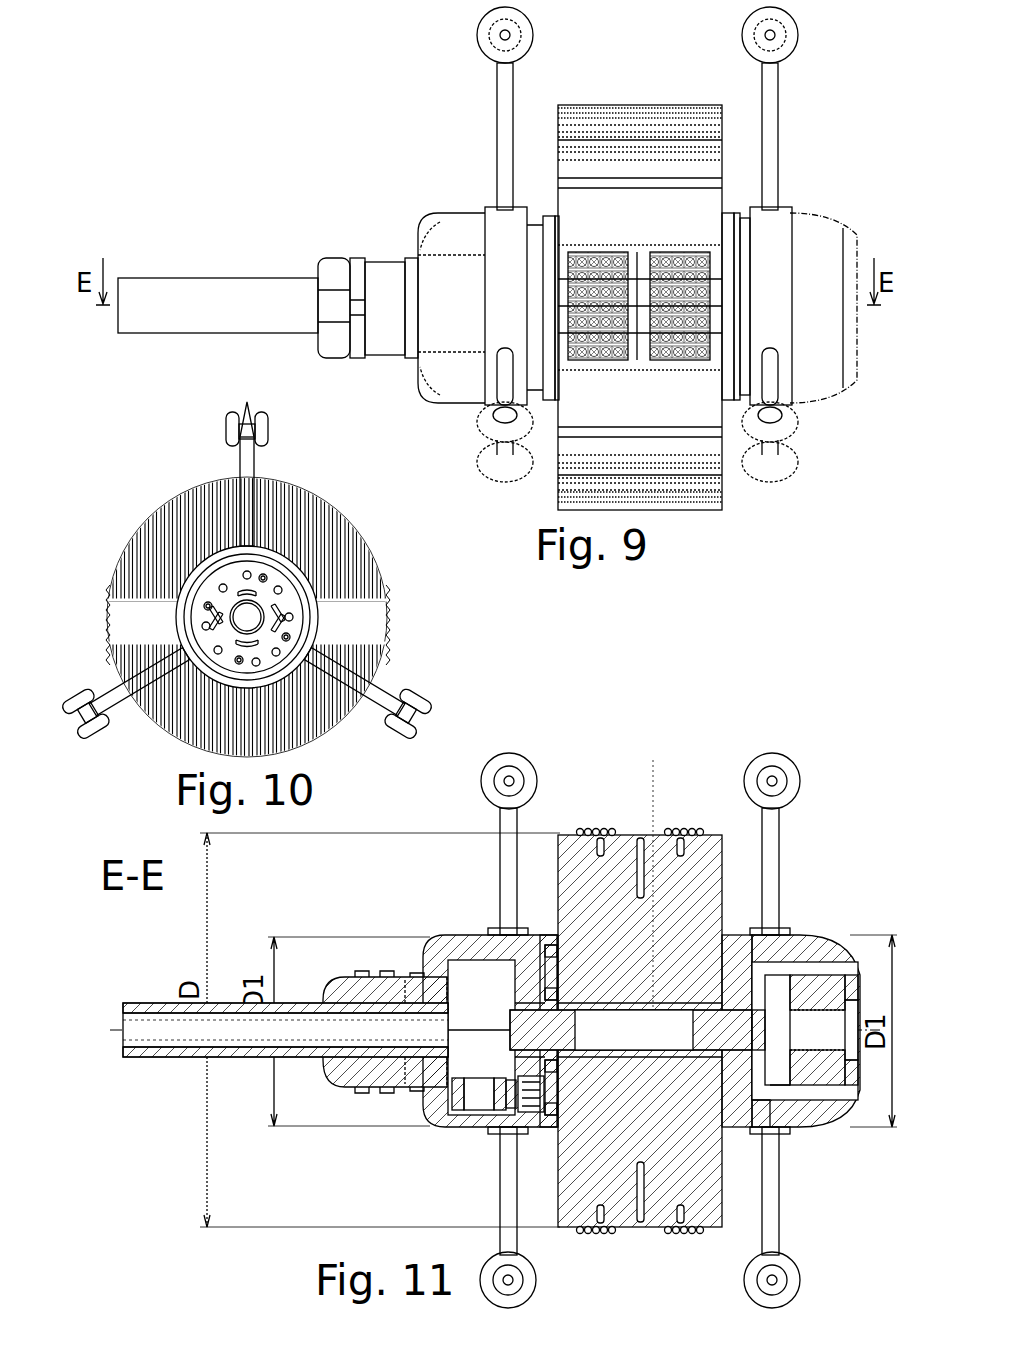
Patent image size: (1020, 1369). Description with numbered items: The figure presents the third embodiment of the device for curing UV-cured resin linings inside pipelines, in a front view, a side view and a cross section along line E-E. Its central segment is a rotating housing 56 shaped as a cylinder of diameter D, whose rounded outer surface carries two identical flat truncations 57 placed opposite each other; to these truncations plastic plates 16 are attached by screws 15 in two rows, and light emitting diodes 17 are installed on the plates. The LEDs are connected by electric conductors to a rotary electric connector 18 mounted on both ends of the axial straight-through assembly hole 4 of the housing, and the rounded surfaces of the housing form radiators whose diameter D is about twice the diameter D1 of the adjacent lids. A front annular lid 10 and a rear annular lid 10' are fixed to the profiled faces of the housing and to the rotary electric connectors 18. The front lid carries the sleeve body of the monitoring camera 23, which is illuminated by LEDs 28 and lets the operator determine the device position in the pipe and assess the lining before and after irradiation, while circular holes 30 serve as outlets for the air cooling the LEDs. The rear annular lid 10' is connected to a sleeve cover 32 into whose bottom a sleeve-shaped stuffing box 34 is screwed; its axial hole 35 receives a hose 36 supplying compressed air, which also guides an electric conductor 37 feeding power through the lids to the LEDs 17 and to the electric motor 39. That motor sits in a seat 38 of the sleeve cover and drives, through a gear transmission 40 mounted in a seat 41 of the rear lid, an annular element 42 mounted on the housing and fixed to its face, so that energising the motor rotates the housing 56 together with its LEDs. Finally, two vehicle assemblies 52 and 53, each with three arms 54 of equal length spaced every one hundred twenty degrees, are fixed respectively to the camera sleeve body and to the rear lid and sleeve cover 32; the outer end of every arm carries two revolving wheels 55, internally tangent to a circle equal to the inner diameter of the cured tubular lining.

In FIG. 11, the axial straight-through assembly hole 4 is at (692, 752).
In FIG. 9, the front annular lid 10 is at (740, 261).
In FIG. 11, the front annular lid 10 is at (742, 991).
In FIG. 9, the rear annular lid 10' is at (536, 261).
In FIG. 11, the rear annular lid 10' is at (536, 991).
In FIG. 11, the screws 15 is at (606, 838).
In FIG. 11, the plastic plates 16 is at (566, 835).
In FIG. 11, the light emitting diodes 17 is at (600, 838).
In FIG. 11, the rotary electric connector 18 is at (772, 1132).
In FIG. 11, the monitoring camera 23 is at (800, 975).
In FIG. 11, the LEDs 28 is at (806, 1030).
In FIG. 11, the circular holes 30 is at (790, 950).
In FIG. 9, the sleeve cover 32 is at (438, 222).
In FIG. 11, the sleeve cover 32 is at (440, 950).
In FIG. 11, the sleeve-shaped stuffing box 34 is at (358, 990).
In FIG. 11, the axial hole (duct) 35 is at (157, 1022).
In FIG. 11, the hose 36 is at (152, 1052).
In FIG. 11, the electric conductor 37 is at (206, 1038).
In FIG. 11, the seat 38 is at (515, 1060).
In FIG. 11, the electric motor 39 is at (500, 1090).
In FIG. 11, the gear transmission 40 is at (540, 1110).
In FIG. 11, the seat 41 is at (440, 1005).
In FIG. 11, the annular element 42 is at (528, 1000).
In FIG. 9, the vehicle assembly 52 is at (770, 105).
In FIG. 11, the vehicle assembly 52 is at (770, 852).
In FIG. 9, the vehicle assembly 53 is at (507, 128).
In FIG. 11, the vehicle assembly 53 is at (505, 835).
In FIG. 9, the arms 54 is at (507, 182).
In FIG. 10, the arms 54 is at (312, 466).
In FIG. 11, the arms 54 is at (507, 1170).
In FIG. 9, the revolving wheels 55 is at (511, 472).
In FIG. 10, the revolving wheels 55 is at (288, 397).
In FIG. 11, the revolving wheels 55 is at (492, 1295).
In FIG. 9, the rotating housing 56 is at (688, 280).
In FIG. 11, the rotating housing 56 is at (700, 830).
In FIG. 10, the flat truncations 57 is at (112, 585).